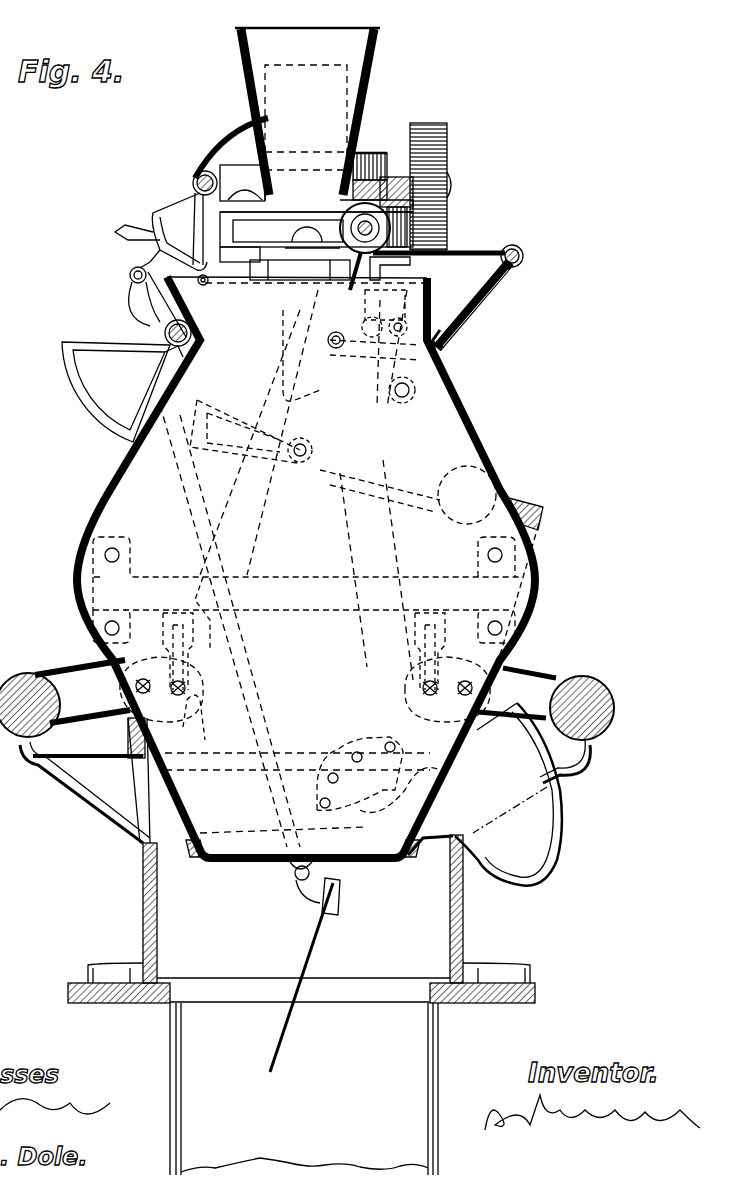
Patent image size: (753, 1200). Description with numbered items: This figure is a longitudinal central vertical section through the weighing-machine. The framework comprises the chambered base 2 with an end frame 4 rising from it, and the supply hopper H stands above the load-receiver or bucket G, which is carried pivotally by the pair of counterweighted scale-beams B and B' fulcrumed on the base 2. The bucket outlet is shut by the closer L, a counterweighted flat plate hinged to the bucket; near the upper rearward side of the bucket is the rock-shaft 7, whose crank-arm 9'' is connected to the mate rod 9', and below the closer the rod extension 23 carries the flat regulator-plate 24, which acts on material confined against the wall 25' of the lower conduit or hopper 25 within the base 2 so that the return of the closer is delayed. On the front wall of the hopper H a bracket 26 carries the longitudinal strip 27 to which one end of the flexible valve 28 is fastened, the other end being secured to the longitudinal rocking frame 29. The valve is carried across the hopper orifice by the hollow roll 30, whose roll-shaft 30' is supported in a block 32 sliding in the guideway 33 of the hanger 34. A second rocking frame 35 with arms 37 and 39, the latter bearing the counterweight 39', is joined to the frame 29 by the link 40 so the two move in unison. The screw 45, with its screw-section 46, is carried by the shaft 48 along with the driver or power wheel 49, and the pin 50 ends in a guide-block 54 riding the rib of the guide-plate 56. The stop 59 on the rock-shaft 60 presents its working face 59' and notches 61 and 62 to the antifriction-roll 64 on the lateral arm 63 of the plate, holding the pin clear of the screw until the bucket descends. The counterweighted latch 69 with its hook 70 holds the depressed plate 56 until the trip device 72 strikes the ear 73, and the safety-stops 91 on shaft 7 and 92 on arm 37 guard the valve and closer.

The hopper H is at (250, 78).
The load-receiver or bucket G is at (100, 507).
The chambered base 2 is at (143, 878).
The end frame 4 is at (370, 668).
The rock-shaft 7 is at (185, 340).
The mate rod 9' is at (128, 388).
The crank-arm 9'' is at (124, 304).
The extended portion of rod 23 is at (318, 906).
The regulator-plate 24 is at (305, 956).
The conduit or hopper 25 is at (304, 1128).
The wall of hopper 25' is at (304, 1089).
The bracket 26 is at (397, 183).
The longitudinal strip 27 is at (413, 193).
The flexible valve 28 is at (473, 258).
The longitudinal rocking frame 29 is at (453, 328).
The hollow roll 30 is at (341, 255).
The roll-shaft 30' is at (312, 255).
The block 32 is at (372, 232).
The guideway 33 is at (247, 232).
The hanger 34 is at (227, 218).
The second valve-controlling rocking frame 35 is at (320, 424).
The arm of rocking frame 37 is at (320, 368).
The arm of rocking frame 39 is at (408, 484).
The counterweight 39' is at (477, 587).
The link 40 is at (390, 358).
The screw 45 is at (369, 166).
The screw-section 46 is at (373, 158).
The shaft 48 is at (451, 185).
The driver or power wheel 49 is at (447, 145).
The pin 50 is at (364, 270).
The guide-block 54 is at (407, 283).
The guide or guide-plate 56 is at (283, 272).
The stop 59 is at (174, 211).
The working face of stop 59' is at (117, 283).
The rock-shaft 60 is at (204, 172).
The notch 61 is at (150, 243).
The notch 62 is at (142, 232).
The lateral arm 63 is at (237, 280).
The antifriction-roll 64 is at (204, 286).
The latch 69 is at (430, 303).
The hook 70 is at (410, 282).
The trip device 72 is at (364, 305).
The ear 73 is at (403, 267).
The safety-stop 91 is at (93, 407).
The safety-stop 92 is at (237, 417).
The counterweighted scale-beam B is at (75, 751).
The counterweighted scale-beam B' is at (534, 768).
The closer L is at (385, 862).